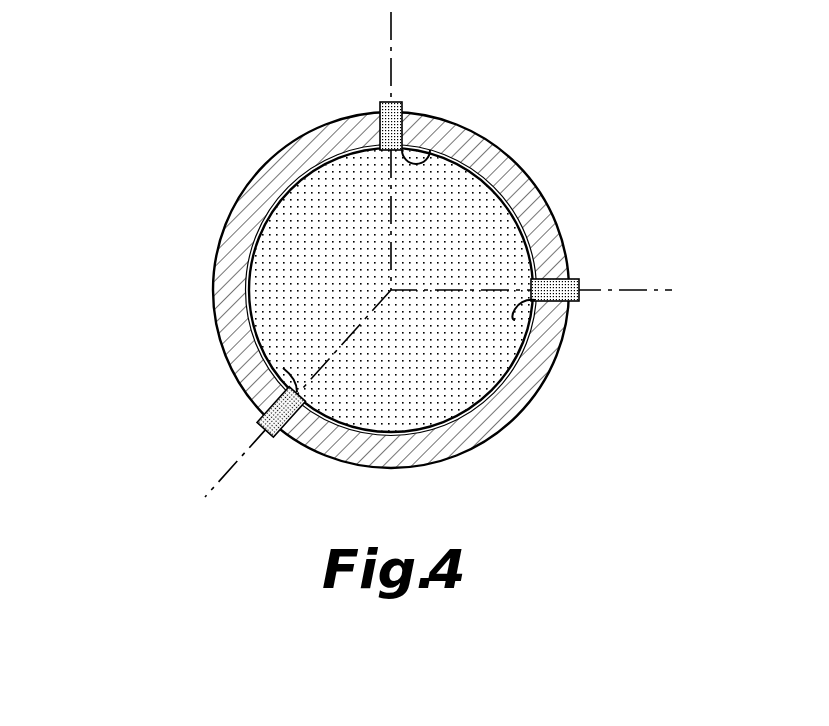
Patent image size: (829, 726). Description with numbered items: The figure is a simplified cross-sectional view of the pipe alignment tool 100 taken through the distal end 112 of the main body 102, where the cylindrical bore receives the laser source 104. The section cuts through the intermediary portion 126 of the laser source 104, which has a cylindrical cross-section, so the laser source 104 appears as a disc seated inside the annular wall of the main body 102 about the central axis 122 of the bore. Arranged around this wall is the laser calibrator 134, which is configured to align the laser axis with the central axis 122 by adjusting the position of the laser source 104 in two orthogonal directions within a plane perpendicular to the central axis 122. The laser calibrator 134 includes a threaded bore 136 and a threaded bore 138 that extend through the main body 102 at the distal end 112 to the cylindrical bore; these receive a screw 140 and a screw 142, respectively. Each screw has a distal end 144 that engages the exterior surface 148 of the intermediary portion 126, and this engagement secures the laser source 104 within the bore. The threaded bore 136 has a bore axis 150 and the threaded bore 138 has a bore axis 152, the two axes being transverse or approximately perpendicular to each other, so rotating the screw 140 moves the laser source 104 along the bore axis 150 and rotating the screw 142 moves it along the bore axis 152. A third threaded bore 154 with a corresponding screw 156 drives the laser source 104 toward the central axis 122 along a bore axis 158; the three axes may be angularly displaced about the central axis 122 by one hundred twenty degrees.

The pipe alignment tool 100 is at (381, 267).
The main body 102 is at (214, 284).
The laser source 104 is at (366, 282).
The distal end 112 is at (452, 460).
The central axis 122 is at (394, 294).
The intermediary portion 126 is at (388, 206).
The laser calibrator 134 is at (607, 400).
The threaded bore 136 is at (380, 131).
The threaded bore 138 is at (560, 278).
The screw 140 is at (403, 105).
The screw 142 is at (581, 300).
The distal end 144 is at (430, 150).
The exterior surface 148 is at (507, 190).
The bore axis 150 is at (280, 237).
The bore axis 152 is at (472, 290).
The third threaded bore 154 is at (293, 427).
The screw 156 is at (262, 421).
The bore axis 158 is at (331, 352).